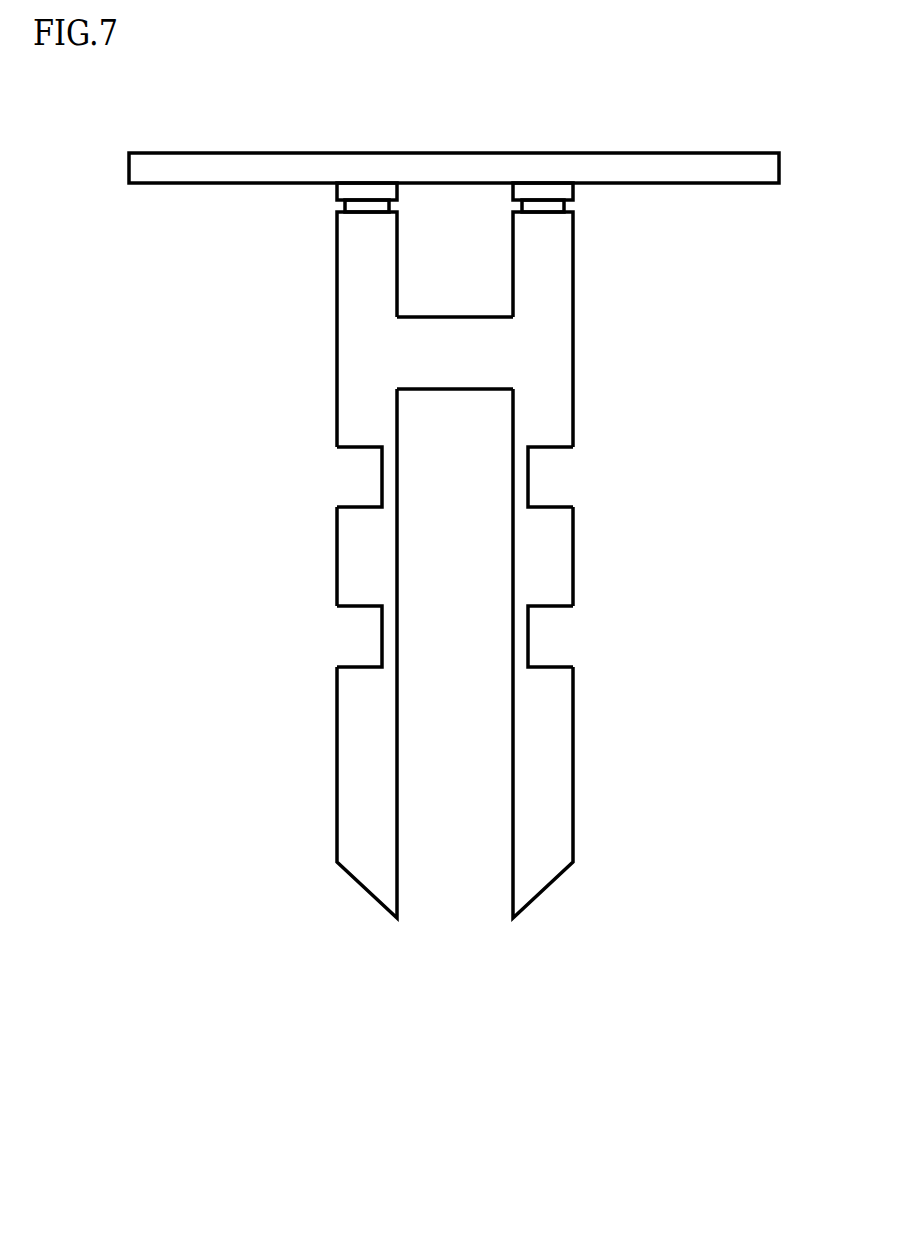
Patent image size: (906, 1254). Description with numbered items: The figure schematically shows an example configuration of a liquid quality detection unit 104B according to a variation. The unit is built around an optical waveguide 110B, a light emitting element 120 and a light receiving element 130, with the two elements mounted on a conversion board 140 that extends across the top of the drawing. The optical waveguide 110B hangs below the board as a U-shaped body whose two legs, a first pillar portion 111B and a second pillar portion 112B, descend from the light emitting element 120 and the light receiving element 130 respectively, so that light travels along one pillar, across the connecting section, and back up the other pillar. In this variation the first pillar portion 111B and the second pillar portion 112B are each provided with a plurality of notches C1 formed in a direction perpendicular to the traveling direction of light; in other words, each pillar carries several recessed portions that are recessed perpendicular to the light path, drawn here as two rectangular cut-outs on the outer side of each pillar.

The conversion board 140 is at (726, 155).
The light receiving element 130 is at (362, 190).
The light emitting element 120 is at (542, 190).
The optical waveguide 110B is at (458, 565).
The second pillar portion 112B is at (337, 390).
The first pillar portion 111B is at (573, 381).
The notch C1 is at (363, 473).
The liquid quality detection unit 104B is at (458, 604).